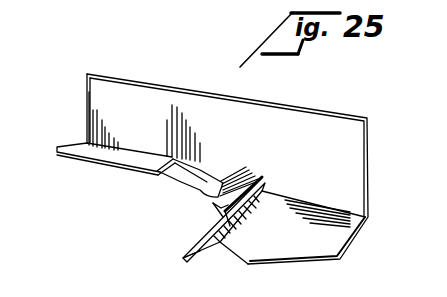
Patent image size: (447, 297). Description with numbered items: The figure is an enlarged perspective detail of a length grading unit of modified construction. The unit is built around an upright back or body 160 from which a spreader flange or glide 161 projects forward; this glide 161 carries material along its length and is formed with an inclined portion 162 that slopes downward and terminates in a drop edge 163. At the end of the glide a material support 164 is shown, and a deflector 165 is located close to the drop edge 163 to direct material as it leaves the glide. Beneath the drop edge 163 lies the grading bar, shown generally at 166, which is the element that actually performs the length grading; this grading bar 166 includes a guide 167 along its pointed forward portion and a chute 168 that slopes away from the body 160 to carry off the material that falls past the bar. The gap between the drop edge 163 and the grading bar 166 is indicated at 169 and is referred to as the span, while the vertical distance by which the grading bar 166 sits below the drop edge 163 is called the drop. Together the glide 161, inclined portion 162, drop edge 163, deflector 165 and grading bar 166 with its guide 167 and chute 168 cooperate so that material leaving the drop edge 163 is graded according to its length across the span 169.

The back or body 160 is at (273, 118).
The spreader flange or glide 161 is at (84, 151).
The inclined portion 162 is at (167, 173).
The drop edge 163 is at (202, 186).
The material support 164 is at (231, 181).
The deflector 165 is at (255, 173).
The grading bar 166 is at (224, 249).
The guide 167 is at (213, 248).
The chute 168 is at (253, 240).
The span 169 is at (218, 208).